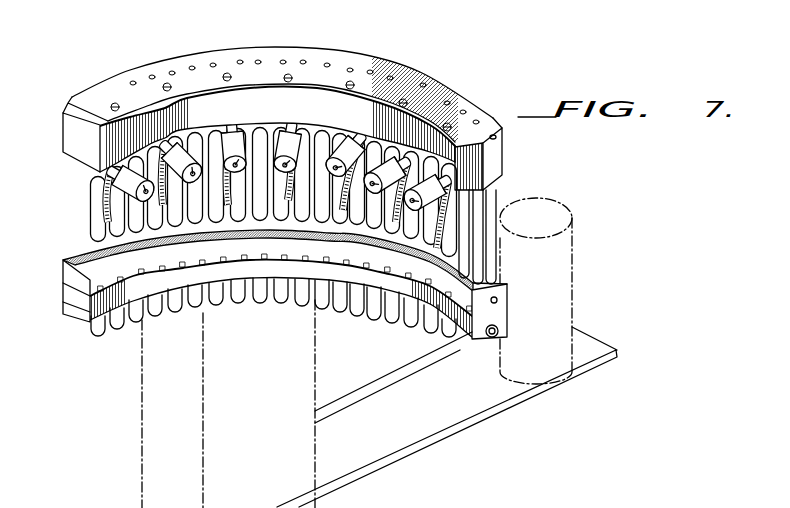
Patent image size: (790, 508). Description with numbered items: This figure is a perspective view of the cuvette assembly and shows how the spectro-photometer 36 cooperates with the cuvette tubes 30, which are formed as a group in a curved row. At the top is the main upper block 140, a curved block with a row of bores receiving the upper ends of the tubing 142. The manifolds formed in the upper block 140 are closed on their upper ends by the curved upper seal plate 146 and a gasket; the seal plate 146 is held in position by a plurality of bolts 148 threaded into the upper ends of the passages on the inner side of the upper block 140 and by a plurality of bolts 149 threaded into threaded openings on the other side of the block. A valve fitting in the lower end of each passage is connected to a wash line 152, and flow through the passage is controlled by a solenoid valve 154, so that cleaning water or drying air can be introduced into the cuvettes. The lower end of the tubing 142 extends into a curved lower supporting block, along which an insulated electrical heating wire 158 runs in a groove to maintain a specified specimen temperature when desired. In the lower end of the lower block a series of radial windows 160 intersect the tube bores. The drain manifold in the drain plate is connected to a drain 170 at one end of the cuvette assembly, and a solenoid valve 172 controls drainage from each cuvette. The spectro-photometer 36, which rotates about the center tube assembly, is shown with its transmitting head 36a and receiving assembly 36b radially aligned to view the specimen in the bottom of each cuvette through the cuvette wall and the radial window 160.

The cuvette tubes 30 is at (450, 74).
The main upper block 140 is at (316, 107).
The curved upper seal plate 146 is at (137, 77).
The bolts 148 is at (287, 80).
The bolts 149 is at (425, 85).
The solenoid valve 154 is at (205, 168).
The wash line 152 is at (416, 222).
The tubing 142 is at (135, 232).
The insulated electrical heating wire 158 is at (62, 284).
The windows 160 is at (140, 282).
The solenoid valve 172 is at (328, 262).
The drain 170 is at (500, 331).
The spectro-photometer 36 is at (142, 437).
The base plate 36a is at (420, 363).
The cylinder 36b is at (573, 247).